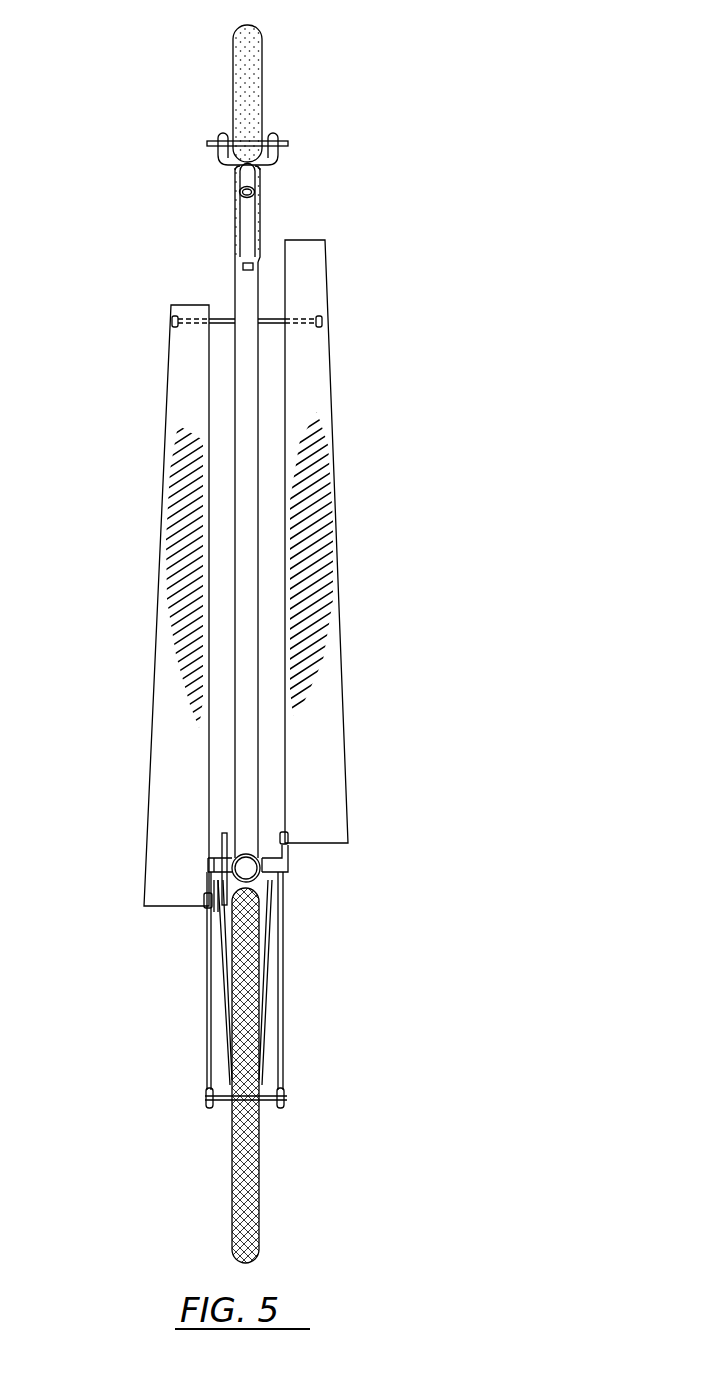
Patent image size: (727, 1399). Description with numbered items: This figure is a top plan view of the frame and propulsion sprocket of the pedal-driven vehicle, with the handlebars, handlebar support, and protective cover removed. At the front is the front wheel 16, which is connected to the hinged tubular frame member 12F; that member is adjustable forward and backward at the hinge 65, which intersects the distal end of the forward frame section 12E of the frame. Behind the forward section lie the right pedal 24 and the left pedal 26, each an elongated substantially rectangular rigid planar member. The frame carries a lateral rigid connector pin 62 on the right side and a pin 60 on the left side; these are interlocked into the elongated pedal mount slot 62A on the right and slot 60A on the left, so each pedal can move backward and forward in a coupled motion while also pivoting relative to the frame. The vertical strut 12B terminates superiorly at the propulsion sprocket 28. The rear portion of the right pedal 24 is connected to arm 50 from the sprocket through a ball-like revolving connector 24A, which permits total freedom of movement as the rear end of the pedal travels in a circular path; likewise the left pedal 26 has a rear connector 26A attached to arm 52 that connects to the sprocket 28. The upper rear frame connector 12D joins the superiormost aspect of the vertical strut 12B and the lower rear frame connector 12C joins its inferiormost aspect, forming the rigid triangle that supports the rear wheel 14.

The front wheel 16 is at (262, 33).
The hinged tubular frame member 12F is at (251, 190).
The forward frame section 12E is at (250, 216).
The hinge 65 is at (246, 262).
The left lateral rigid connector pin 60 is at (222, 318).
The right lateral rigid connector pin 62 is at (278, 316).
The left elongated pedal mount slot 60A is at (160, 322).
The right elongated pedal mount slot 62A is at (340, 322).
The left pedal 26 is at (176, 390).
The right pedal 24 is at (319, 388).
The vertical strut 12B is at (246, 858).
The propulsion sprocket 28 is at (222, 848).
The ball-like revolving connector 24A is at (290, 846).
The arm 50 is at (290, 860).
The rear connector 26A is at (205, 905).
The upper rear frame connector 12D is at (272, 940).
The arm 52 is at (213, 912).
The lower rear frame connector 12C is at (297, 1033).
The rear wheel 14 is at (259, 1228).